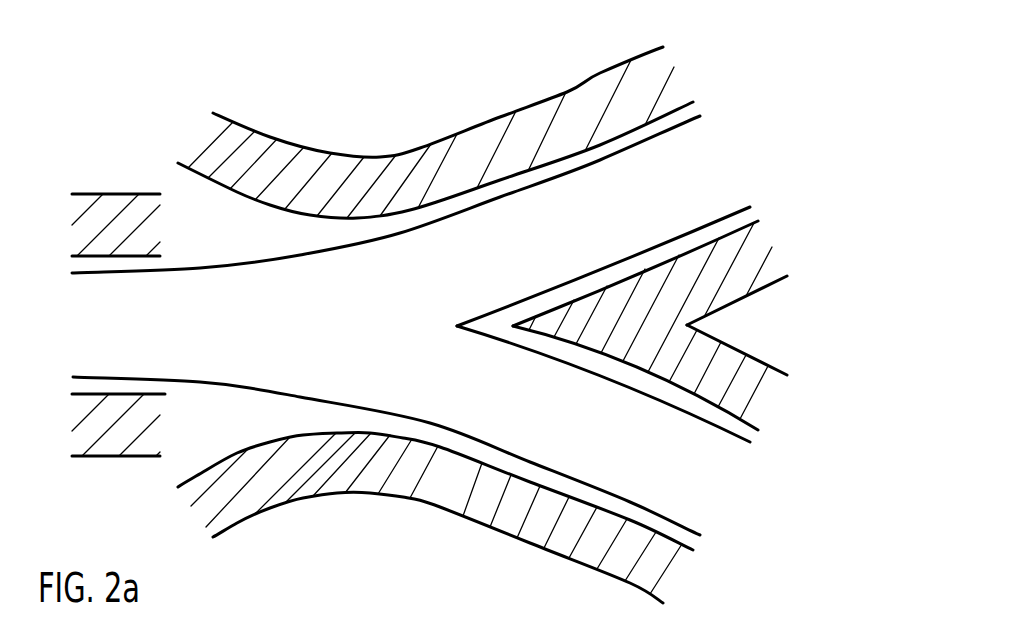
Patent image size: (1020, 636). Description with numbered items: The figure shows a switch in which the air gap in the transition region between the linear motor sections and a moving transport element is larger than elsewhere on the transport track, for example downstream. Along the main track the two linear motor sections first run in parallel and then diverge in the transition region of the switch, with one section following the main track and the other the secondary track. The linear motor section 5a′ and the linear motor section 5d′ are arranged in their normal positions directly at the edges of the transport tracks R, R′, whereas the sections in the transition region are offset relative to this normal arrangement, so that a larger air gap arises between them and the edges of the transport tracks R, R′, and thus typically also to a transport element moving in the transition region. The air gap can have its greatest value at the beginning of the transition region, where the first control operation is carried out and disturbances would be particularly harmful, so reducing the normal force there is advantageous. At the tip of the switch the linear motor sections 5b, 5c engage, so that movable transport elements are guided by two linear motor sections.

The linear motor section 5a′ is at (110, 197).
The transport track edge R is at (212, 265).
The transport track edge R′ is at (210, 387).
The linear motor section 5d′ is at (110, 448).
The linear motor section 5b is at (750, 272).
The linear motor section 5c is at (750, 380).